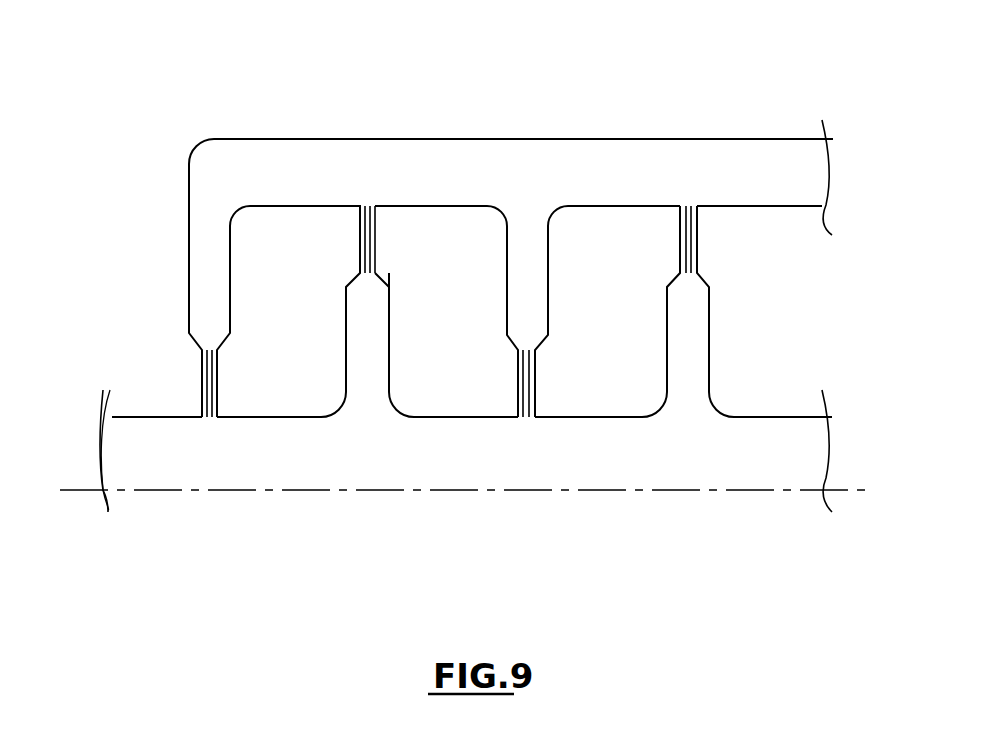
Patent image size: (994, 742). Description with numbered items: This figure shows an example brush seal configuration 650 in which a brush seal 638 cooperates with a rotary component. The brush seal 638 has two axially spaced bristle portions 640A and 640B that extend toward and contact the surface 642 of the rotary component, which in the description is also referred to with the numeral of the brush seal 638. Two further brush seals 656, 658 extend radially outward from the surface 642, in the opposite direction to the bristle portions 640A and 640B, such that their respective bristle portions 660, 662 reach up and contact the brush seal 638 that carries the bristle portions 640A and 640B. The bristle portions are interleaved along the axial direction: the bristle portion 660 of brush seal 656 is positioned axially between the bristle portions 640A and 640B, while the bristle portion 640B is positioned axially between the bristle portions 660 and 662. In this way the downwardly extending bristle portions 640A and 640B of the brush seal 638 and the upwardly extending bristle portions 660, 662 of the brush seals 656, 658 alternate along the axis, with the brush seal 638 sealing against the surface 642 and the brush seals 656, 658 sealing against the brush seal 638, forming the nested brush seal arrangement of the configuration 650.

The brush seal configuration 650 is at (142, 97).
The brush seal 638 is at (503, 163).
The bristle portion 660 is at (355, 248).
The bristle portion 662 is at (704, 250).
The bristle portion 640A is at (190, 370).
The bristle portion 640B is at (543, 383).
The brush seal 656 is at (375, 330).
The brush seal 658 is at (696, 373).
The surface 642 is at (300, 417).